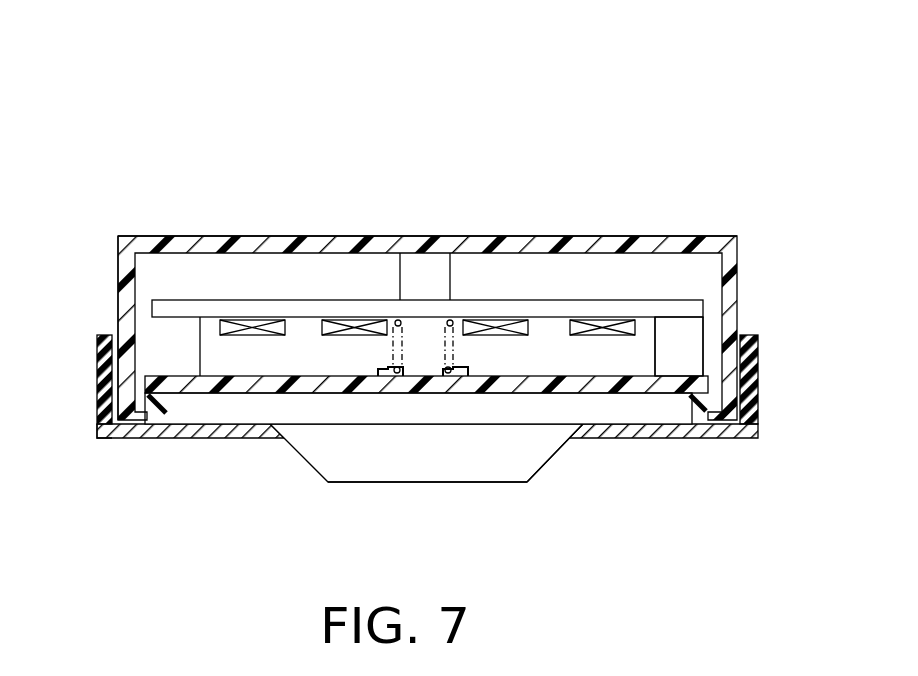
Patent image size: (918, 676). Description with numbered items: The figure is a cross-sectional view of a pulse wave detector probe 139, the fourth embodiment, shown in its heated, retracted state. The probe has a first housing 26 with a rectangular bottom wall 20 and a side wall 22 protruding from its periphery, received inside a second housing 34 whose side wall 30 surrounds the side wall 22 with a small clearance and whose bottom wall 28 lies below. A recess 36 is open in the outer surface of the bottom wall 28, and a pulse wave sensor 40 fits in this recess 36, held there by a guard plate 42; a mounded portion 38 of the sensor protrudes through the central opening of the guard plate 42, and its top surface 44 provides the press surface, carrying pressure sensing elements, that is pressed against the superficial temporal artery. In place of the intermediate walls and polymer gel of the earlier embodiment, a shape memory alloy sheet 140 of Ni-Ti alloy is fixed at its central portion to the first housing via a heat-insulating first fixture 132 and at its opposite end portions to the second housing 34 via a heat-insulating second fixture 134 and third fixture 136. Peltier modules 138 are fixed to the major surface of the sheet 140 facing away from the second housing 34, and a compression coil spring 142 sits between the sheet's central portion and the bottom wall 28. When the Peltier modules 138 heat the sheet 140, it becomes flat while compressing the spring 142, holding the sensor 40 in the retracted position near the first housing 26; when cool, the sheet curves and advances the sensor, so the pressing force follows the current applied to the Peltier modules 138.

The pulse wave detector probe 139 is at (236, 73).
The first housing 26 is at (752, 224).
The bottom wall 20 is at (245, 245).
The side wall 22 is at (124, 299).
The side wall 30 is at (98, 386).
The second housing 34 is at (775, 462).
The bottom wall 28 is at (127, 428).
The guard plate 42 is at (607, 430).
The recess 36 is at (207, 396).
The second fixture 134 is at (167, 363).
The mounded portion 38 is at (362, 467).
The top surface 44 is at (455, 487).
The pulse wave sensor 40 is at (524, 508).
The first fixture 132 is at (430, 270).
The shape memory alloy sheet 140 is at (550, 315).
The third fixture 136 is at (678, 357).
The Peltier modules 138 is at (253, 336).
The compression coil spring 142 is at (398, 320).